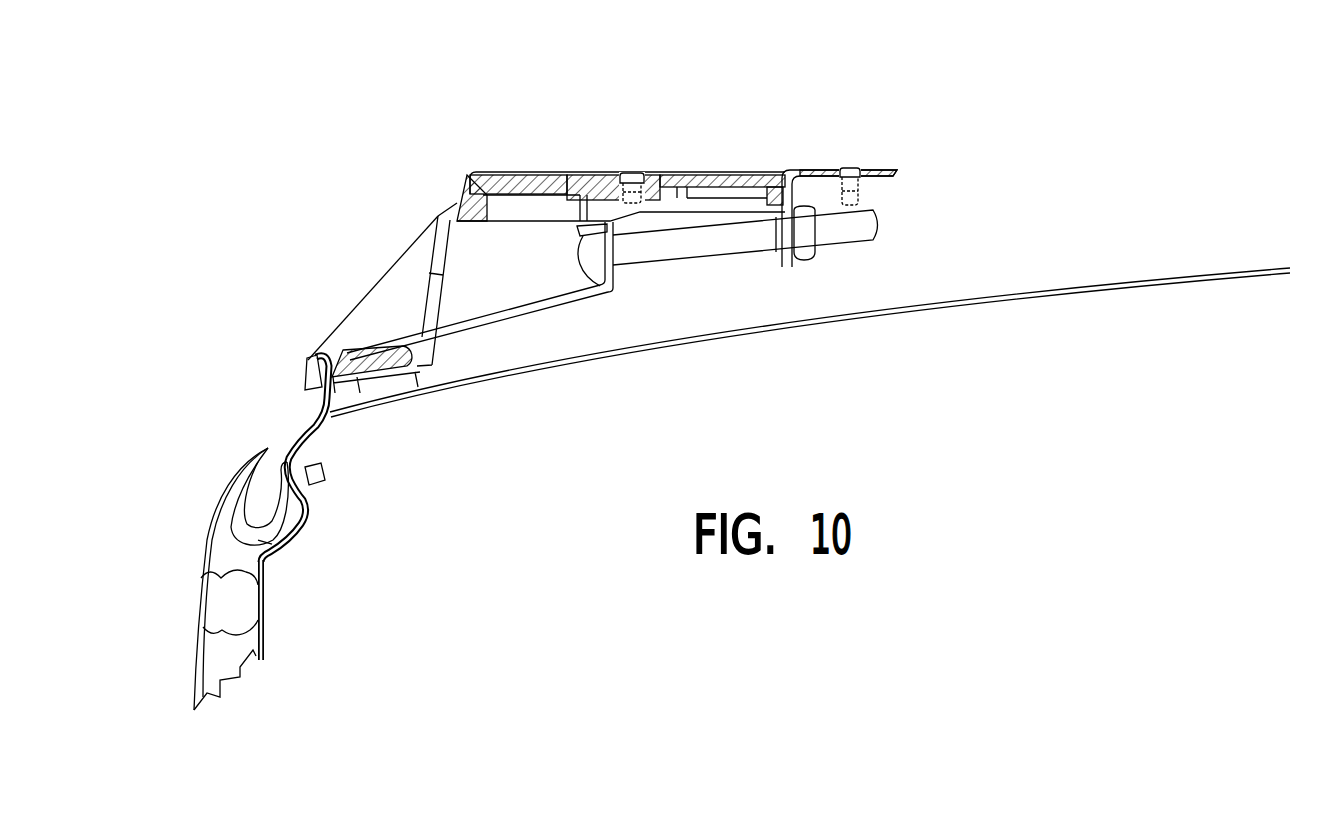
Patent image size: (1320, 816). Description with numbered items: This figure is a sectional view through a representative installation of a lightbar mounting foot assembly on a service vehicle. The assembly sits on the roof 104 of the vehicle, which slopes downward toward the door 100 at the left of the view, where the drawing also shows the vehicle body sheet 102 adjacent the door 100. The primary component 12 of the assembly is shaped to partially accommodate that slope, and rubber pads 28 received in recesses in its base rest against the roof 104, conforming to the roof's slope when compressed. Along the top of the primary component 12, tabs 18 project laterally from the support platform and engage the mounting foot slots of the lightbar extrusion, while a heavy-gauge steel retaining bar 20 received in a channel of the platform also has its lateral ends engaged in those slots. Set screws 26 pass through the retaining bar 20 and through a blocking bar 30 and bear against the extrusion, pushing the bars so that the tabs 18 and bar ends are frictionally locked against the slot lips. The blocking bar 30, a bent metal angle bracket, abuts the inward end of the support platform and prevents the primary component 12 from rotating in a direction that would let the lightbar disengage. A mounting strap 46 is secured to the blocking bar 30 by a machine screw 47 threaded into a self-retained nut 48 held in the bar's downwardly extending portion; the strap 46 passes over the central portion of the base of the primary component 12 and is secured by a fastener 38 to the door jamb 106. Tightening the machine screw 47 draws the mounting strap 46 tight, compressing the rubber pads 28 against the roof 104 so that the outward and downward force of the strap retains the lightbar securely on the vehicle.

The primary component 12 is at (365, 230).
The tabs 18 is at (513, 170).
The retaining bar 20 is at (613, 170).
The set screws 26 is at (840, 167).
The rubber pads 28 is at (357, 357).
The blocking bar 30 is at (877, 172).
The fastener 38 is at (332, 471).
The mounting strap 46 is at (312, 406).
The machine screw 47 is at (690, 262).
The self-retained nut 48 is at (820, 263).
The door 100 is at (220, 583).
The trim panel 102 is at (272, 545).
The roof 104 is at (1025, 292).
The door jamb 106 is at (292, 512).